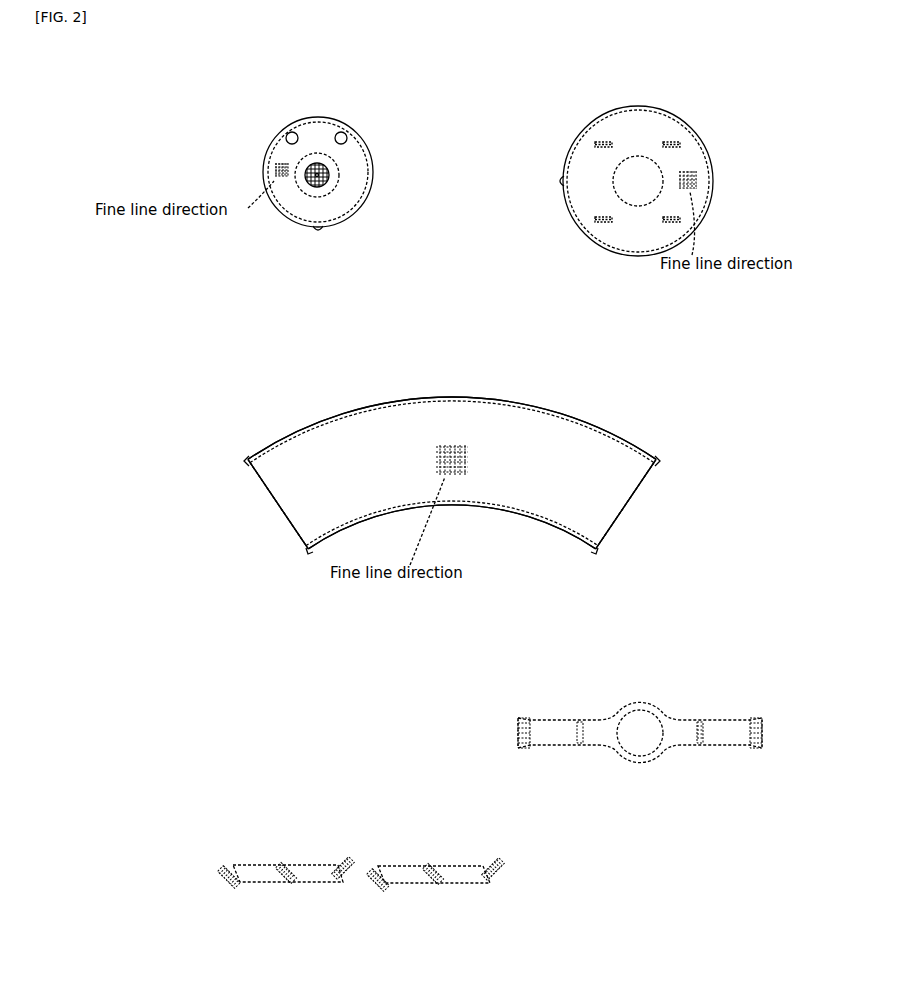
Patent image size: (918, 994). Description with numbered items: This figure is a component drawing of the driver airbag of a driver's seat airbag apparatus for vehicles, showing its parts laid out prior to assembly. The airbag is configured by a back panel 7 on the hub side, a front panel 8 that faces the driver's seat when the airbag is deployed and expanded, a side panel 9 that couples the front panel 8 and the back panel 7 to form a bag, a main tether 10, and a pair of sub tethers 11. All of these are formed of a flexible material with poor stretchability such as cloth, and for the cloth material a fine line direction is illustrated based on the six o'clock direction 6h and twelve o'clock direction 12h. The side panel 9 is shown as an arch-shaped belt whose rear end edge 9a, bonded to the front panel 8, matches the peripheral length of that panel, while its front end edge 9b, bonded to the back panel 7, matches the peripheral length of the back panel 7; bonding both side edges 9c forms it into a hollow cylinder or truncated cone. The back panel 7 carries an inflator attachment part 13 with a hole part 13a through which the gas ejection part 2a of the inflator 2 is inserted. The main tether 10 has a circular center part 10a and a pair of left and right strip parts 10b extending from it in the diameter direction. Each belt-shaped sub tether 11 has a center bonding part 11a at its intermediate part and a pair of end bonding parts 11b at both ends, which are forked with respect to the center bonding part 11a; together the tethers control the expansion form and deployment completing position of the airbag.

The back panel 7 is at (372, 124).
The inflator 2 is at (345, 185).
The gas ejection part 2a is at (338, 173).
The inflator attachment part 13 is at (290, 203).
The hole part 13a is at (325, 192).
The 12 o'clock direction 12h is at (514, 283).
The 6 o'clock direction 6h is at (450, 321).
The front panel 8 is at (708, 118).
The side panel 9 is at (527, 384).
The rear end edge 9a is at (407, 398).
The front end edge 9b is at (460, 508).
The side edges 9c is at (274, 508).
The main tether 10 is at (672, 694).
The center part 10a is at (645, 746).
The strip parts 10b is at (558, 728).
The sub tethers 11 is at (300, 836).
The center bonding part 11a is at (284, 880).
The end bonding parts 11b is at (233, 866).